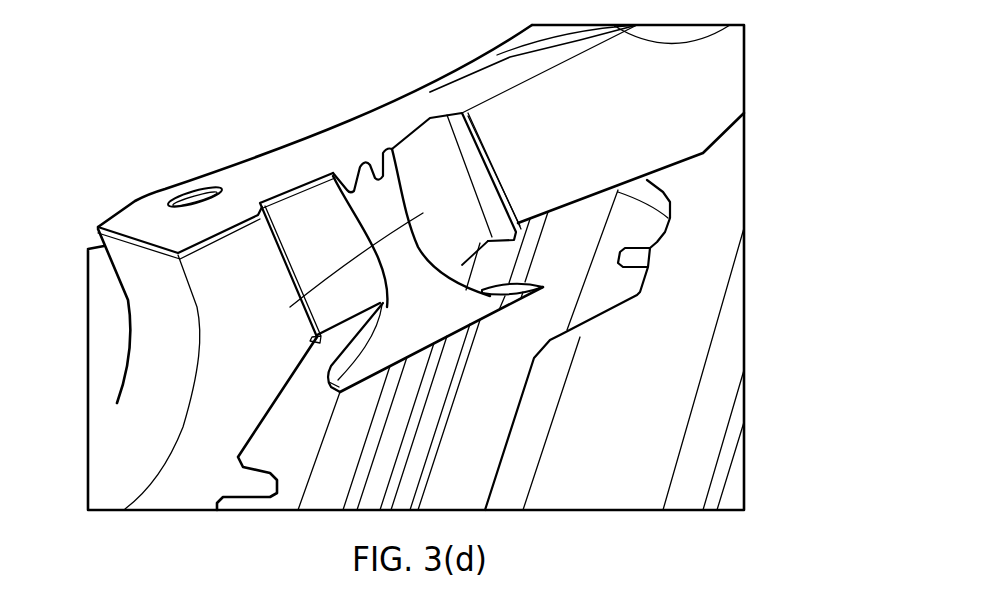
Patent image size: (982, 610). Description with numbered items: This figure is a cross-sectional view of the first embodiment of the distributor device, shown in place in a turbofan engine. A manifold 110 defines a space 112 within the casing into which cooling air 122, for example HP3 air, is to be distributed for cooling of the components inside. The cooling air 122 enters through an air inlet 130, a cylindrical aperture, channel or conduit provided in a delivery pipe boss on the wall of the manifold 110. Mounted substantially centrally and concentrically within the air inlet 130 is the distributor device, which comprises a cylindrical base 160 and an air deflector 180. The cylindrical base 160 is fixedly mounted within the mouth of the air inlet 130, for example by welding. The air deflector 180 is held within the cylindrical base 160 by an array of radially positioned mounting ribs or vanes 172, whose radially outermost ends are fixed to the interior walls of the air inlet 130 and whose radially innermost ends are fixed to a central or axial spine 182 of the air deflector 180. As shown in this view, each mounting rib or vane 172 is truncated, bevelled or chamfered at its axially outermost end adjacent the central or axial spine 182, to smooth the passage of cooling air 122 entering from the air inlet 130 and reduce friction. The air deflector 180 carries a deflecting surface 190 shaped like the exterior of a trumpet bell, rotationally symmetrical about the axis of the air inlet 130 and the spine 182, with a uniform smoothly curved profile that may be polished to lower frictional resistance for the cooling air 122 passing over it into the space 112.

The manifold 110 is at (723, 90).
The space 112 is at (667, 355).
The cooling air 122 is at (300, 218).
The air inlet 130 is at (485, 155).
The cylindrical base 160 is at (450, 125).
The mounting ribs or vanes 172 is at (330, 235).
The air deflector 180 is at (458, 330).
The central or axial spine 182 is at (360, 172).
The deflecting surface 190 is at (345, 368).